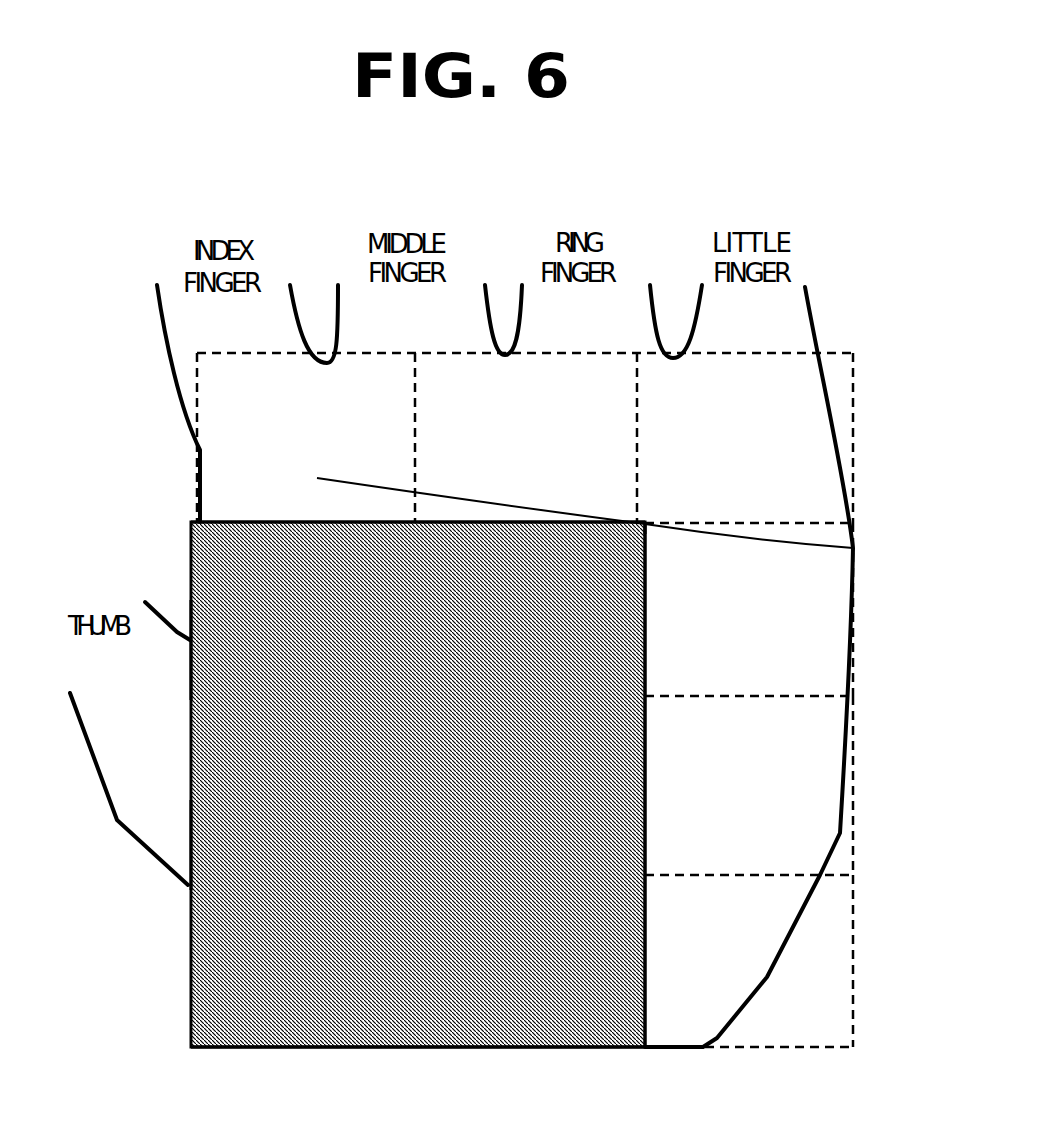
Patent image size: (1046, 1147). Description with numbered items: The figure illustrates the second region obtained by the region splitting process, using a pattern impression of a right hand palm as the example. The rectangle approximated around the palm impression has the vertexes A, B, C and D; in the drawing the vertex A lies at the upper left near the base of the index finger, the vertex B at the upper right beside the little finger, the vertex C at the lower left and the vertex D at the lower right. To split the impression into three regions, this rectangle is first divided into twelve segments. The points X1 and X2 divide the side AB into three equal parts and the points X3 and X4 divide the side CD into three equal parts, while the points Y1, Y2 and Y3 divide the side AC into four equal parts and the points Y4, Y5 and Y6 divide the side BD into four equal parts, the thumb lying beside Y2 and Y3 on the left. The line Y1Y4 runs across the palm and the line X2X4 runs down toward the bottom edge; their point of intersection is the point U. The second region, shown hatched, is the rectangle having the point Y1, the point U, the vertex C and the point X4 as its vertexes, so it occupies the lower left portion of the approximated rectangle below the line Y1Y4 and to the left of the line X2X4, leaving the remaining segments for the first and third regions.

The vertex A of approximated rectangle A is at (192, 417).
The vertex B of approximated rectangle B is at (541, 428).
The vertex C of approximated rectangle C is at (401, 1059).
The vertex D of approximated rectangle D is at (769, 969).
The intersection point U is at (656, 511).
The dividing point X1 is at (416, 418).
The dividing point X2 is at (622, 418).
The dividing point X3 is at (418, 1070).
The dividing point X4 is at (637, 809).
The dividing point Y1 is at (398, 521).
The dividing point Y2 is at (170, 654).
The dividing point Y3 is at (156, 847).
The dividing point Y4 is at (772, 528).
The dividing point Y5 is at (772, 618).
The dividing point Y6 is at (771, 793).